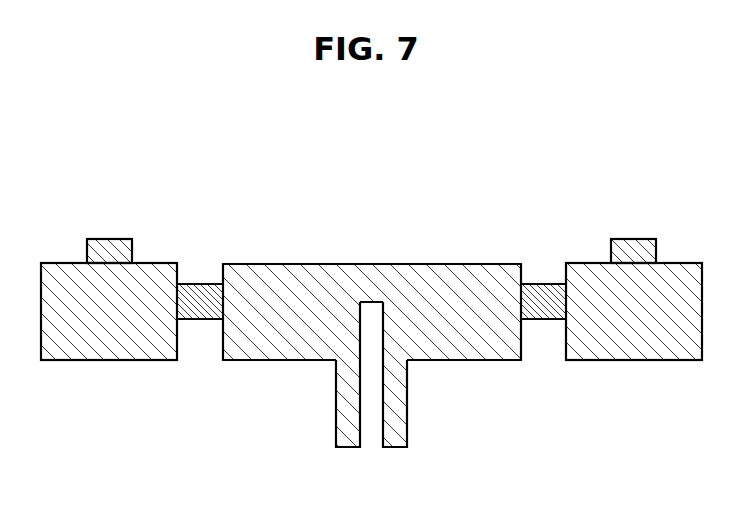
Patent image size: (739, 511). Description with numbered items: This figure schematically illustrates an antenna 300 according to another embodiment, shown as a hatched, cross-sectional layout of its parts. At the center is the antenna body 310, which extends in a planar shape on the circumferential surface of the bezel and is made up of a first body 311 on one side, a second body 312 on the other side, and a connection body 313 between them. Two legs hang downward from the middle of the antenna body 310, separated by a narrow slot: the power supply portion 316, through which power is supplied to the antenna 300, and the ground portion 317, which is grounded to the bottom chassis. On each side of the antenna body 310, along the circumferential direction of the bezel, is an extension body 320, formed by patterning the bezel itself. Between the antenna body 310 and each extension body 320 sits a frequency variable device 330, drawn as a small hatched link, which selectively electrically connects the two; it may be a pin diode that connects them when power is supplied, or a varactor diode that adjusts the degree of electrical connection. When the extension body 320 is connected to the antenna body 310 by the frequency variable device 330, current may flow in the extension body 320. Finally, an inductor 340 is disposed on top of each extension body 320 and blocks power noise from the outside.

The antenna 300 is at (297, 151).
The antenna body 310 is at (372, 335).
The first body 311 is at (290, 278).
The second body 312 is at (455, 285).
The connection body 313 is at (370, 285).
The power supply portion 316 is at (347, 432).
The ground portion 317 is at (397, 432).
The extension body 320 is at (100, 362).
The frequency variable device 330 is at (198, 283).
The inductor 340 is at (97, 236).